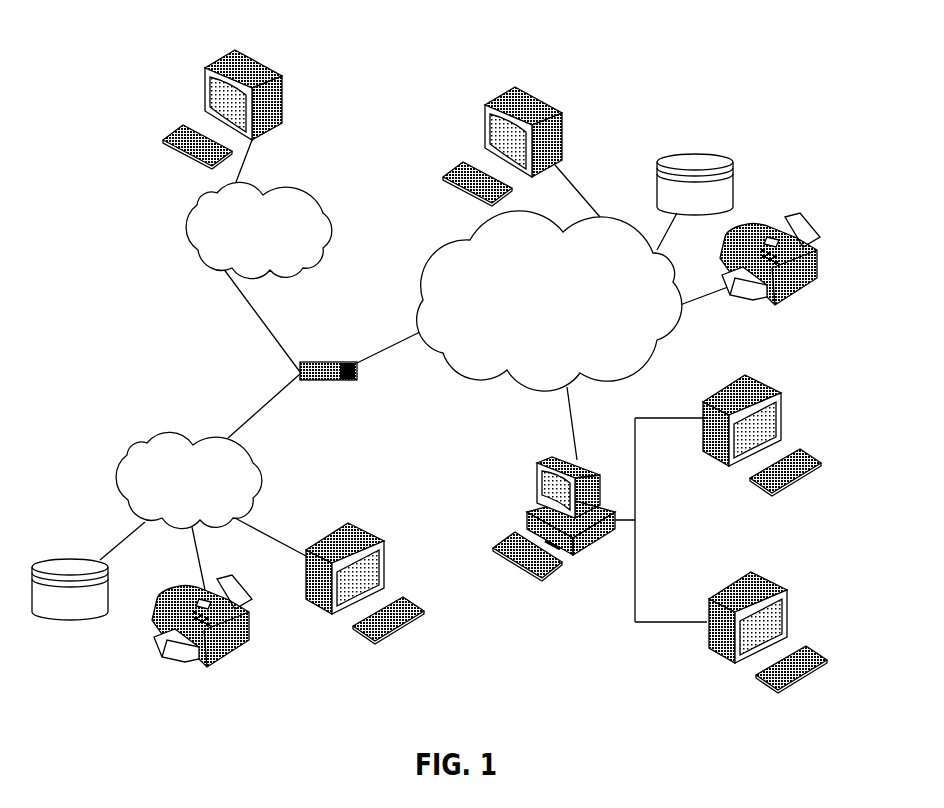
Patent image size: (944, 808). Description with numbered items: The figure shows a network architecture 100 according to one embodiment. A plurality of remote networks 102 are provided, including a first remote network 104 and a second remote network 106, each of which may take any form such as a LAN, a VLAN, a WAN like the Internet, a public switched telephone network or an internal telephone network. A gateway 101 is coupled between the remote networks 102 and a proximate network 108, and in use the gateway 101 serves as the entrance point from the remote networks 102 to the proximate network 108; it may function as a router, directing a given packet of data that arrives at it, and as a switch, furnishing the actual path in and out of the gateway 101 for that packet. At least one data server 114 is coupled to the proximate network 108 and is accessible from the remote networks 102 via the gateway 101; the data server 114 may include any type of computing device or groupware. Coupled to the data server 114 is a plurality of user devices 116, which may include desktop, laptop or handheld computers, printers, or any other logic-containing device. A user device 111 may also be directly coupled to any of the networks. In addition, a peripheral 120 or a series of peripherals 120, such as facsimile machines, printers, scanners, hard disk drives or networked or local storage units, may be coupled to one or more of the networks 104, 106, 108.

The network architecture 100 is at (147, 33).
The gateway 101 is at (315, 360).
The remote networks 102 is at (160, 292).
The first remote network 104 is at (120, 462).
The second remote network 106 is at (320, 202).
The proximate network 108 is at (649, 365).
The user device 111 is at (562, 116).
The data server 114 is at (537, 473).
The user devices 116 is at (283, 82).
The peripheral 120 is at (70, 622).